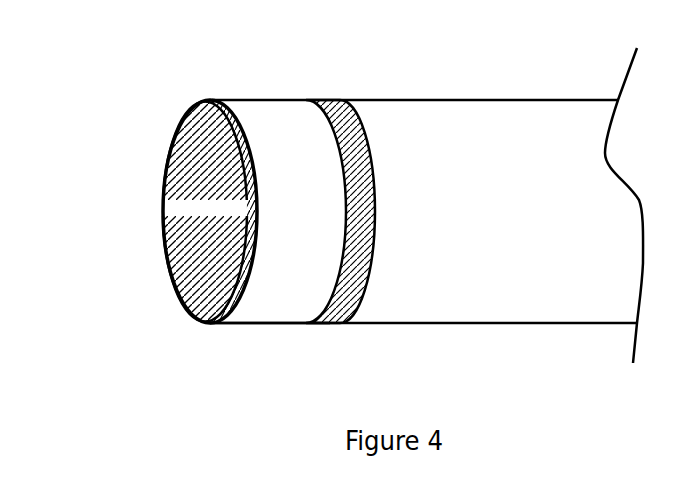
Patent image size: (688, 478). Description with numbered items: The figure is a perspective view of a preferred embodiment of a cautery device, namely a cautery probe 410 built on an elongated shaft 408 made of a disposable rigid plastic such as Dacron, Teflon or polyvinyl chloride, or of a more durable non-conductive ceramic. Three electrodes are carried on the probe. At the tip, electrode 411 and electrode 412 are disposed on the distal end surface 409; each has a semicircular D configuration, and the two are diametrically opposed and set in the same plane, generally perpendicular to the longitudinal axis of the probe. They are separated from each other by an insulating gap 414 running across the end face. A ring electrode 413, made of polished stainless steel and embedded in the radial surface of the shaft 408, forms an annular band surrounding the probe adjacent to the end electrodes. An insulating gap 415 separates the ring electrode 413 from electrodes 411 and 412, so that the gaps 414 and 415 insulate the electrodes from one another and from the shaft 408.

The elongated shaft 408 is at (493, 292).
The distal end surface 409 is at (158, 143).
The cautery probe 410 is at (458, 100).
The electrode 411 is at (186, 228).
The electrode 412 is at (249, 173).
The ring electrode 413 is at (328, 100).
The insulating gap 414 is at (187, 208).
The insulating gap 415 is at (298, 313).